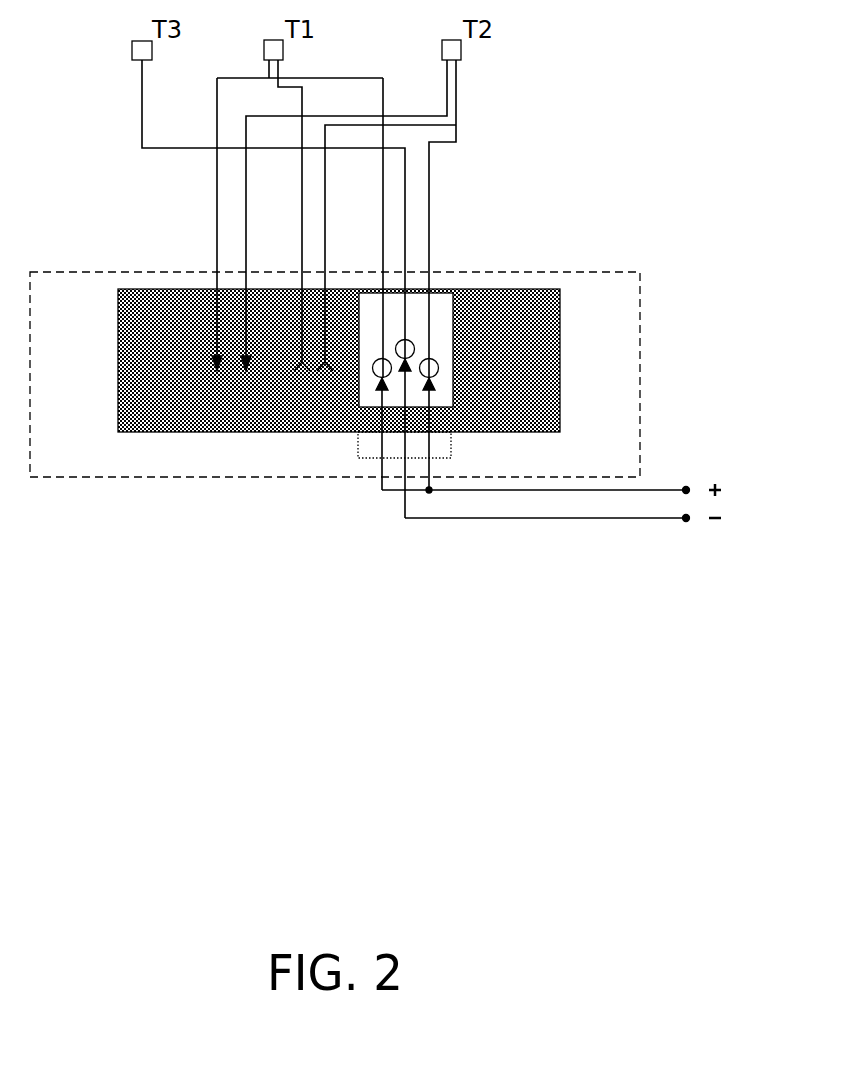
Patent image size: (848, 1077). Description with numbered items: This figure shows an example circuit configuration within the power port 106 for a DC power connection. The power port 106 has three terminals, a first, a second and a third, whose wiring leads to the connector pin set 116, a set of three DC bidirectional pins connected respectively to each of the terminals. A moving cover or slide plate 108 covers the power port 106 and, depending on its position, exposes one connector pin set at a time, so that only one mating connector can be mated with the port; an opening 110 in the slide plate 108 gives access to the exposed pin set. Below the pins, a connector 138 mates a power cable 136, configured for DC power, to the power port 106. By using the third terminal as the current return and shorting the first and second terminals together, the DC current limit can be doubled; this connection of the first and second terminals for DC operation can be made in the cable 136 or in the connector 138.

The power port 106 is at (335, 374).
The moving cover/slide plate 108 is at (339, 360).
The opening 110 is at (442, 310).
The connector pin set 116 is at (441, 530).
The power cable 136 is at (677, 480).
The connector 138 is at (375, 447).